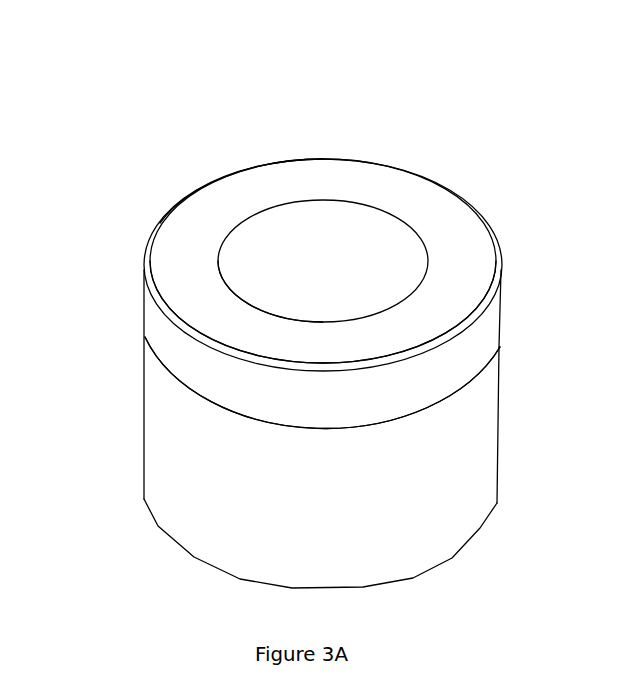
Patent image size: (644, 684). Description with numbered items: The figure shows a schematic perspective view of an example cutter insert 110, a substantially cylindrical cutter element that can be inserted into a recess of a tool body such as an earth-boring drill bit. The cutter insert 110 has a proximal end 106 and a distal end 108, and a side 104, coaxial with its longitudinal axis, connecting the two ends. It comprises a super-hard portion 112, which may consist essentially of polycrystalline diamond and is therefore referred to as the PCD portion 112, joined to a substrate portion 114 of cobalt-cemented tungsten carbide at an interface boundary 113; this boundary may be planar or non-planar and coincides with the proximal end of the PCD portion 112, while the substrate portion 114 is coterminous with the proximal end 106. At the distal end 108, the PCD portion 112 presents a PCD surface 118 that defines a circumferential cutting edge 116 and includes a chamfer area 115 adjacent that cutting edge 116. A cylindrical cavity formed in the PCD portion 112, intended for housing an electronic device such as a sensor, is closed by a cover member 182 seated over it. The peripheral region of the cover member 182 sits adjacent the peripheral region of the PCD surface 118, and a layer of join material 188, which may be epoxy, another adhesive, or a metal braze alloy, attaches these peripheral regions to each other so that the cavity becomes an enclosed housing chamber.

The side 104 is at (137, 384).
The proximal end 106 is at (473, 555).
The distal end 108 is at (478, 192).
The cutter insert 110 is at (335, 135).
The super-hard portion 112 is at (490, 330).
The interface boundary 113 is at (207, 404).
The substrate portion 114 is at (480, 455).
The chamfer area 115 is at (158, 300).
The cutting edge 116 is at (160, 223).
The PCD surface 118 is at (400, 195).
The cover member 182 is at (268, 208).
The join material 188 is at (262, 262).